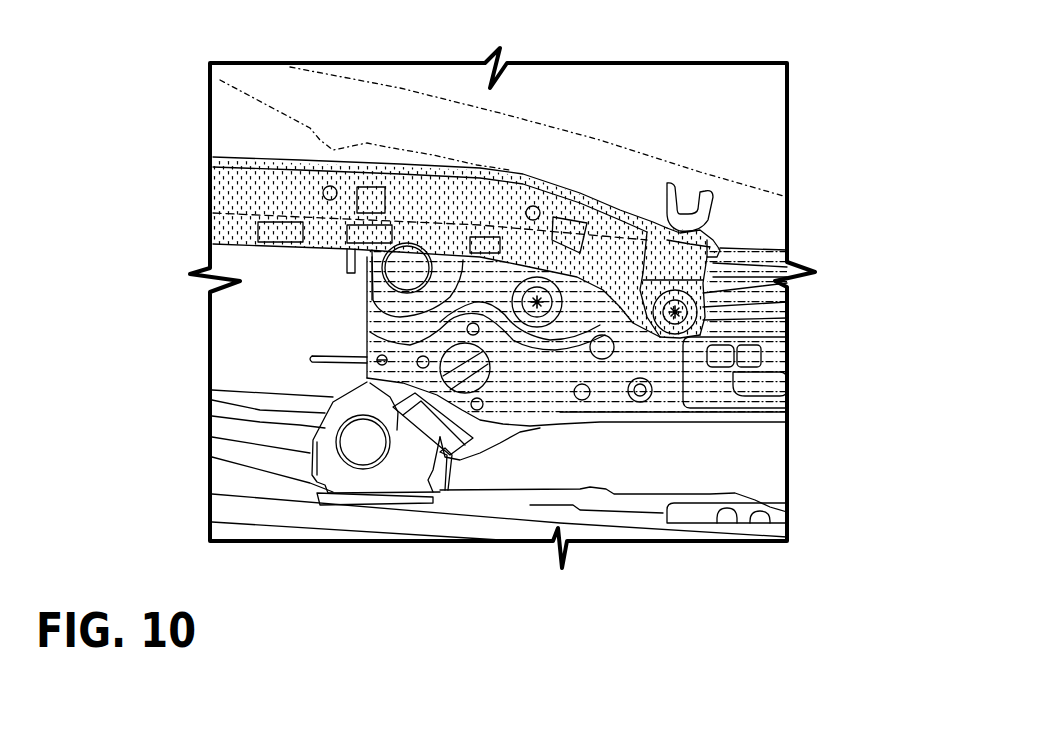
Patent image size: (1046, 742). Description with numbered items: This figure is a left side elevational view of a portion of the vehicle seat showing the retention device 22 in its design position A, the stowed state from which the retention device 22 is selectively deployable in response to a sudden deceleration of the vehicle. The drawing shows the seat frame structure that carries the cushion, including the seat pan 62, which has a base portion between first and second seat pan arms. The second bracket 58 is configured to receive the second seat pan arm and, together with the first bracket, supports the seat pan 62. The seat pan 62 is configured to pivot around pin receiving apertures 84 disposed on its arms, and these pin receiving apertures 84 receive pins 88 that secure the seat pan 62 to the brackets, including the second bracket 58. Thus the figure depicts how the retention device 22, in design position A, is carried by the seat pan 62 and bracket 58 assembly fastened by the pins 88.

The retention device 22 is at (667, 193).
The design position A is at (717, 183).
The seat pan 62 is at (255, 197).
The pins 88 is at (673, 318).
The pin receiving apertures 84 is at (660, 340).
The second bracket 58 is at (612, 395).